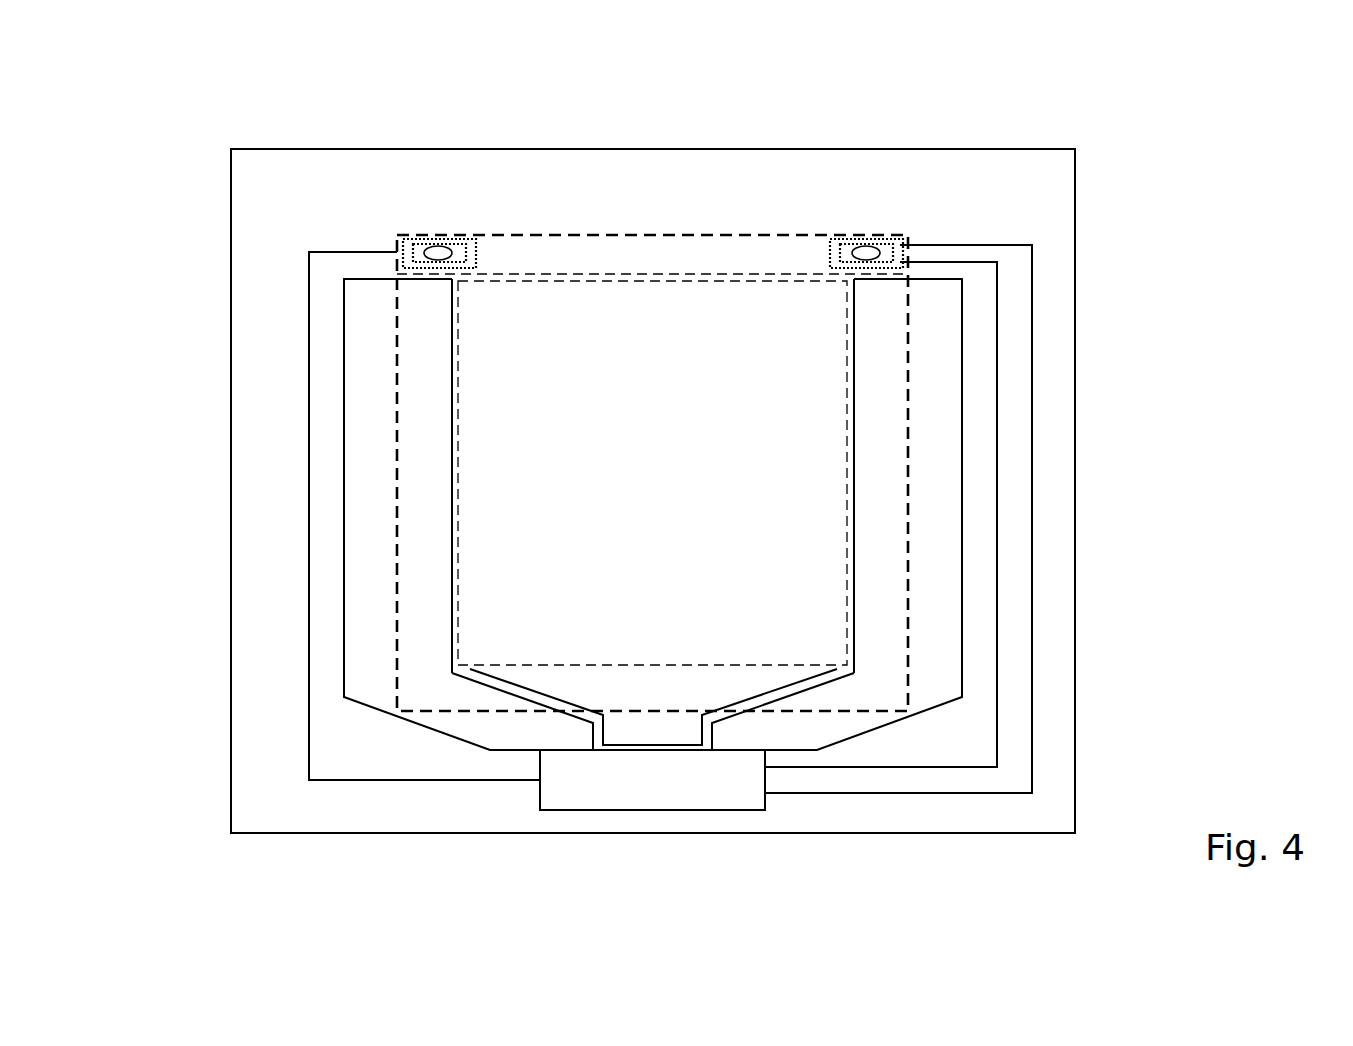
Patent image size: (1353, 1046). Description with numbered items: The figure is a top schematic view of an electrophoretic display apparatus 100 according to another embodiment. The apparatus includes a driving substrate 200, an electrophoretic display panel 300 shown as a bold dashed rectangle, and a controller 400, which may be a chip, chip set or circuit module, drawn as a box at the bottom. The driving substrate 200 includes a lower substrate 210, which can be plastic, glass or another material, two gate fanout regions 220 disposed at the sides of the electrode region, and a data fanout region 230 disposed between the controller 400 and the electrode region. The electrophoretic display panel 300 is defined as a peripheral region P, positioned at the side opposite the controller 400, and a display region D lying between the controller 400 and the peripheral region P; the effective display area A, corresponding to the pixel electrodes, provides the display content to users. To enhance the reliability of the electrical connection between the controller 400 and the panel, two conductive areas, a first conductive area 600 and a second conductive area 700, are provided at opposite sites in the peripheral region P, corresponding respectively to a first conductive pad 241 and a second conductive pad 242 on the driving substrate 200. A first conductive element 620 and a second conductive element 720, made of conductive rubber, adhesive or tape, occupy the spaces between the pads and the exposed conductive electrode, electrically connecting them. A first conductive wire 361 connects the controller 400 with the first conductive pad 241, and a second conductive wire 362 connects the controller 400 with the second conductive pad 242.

The electrophoretic display apparatus 100 is at (1282, 95).
The driving substrate 200 is at (1076, 178).
The lower substrate 210 is at (1060, 222).
The gate fanout region 220 is at (367, 636).
The data fanout region 230 is at (649, 730).
The first conductive pad 241 is at (418, 235).
The second conductive pad 242 is at (848, 235).
The electrophoretic display panel 300 is at (677, 236).
The first conductive wire 361 is at (308, 373).
The second conductive wire 362 is at (997, 446).
The controller 400 is at (592, 788).
The first conductive area 600 is at (463, 237).
The first conductive element 620 is at (437, 252).
The second conductive area 700 is at (888, 235).
The second conductive element 720 is at (863, 252).
The peripheral region P is at (397, 238).
The display region D is at (413, 328).
The effective display area A is at (485, 473).